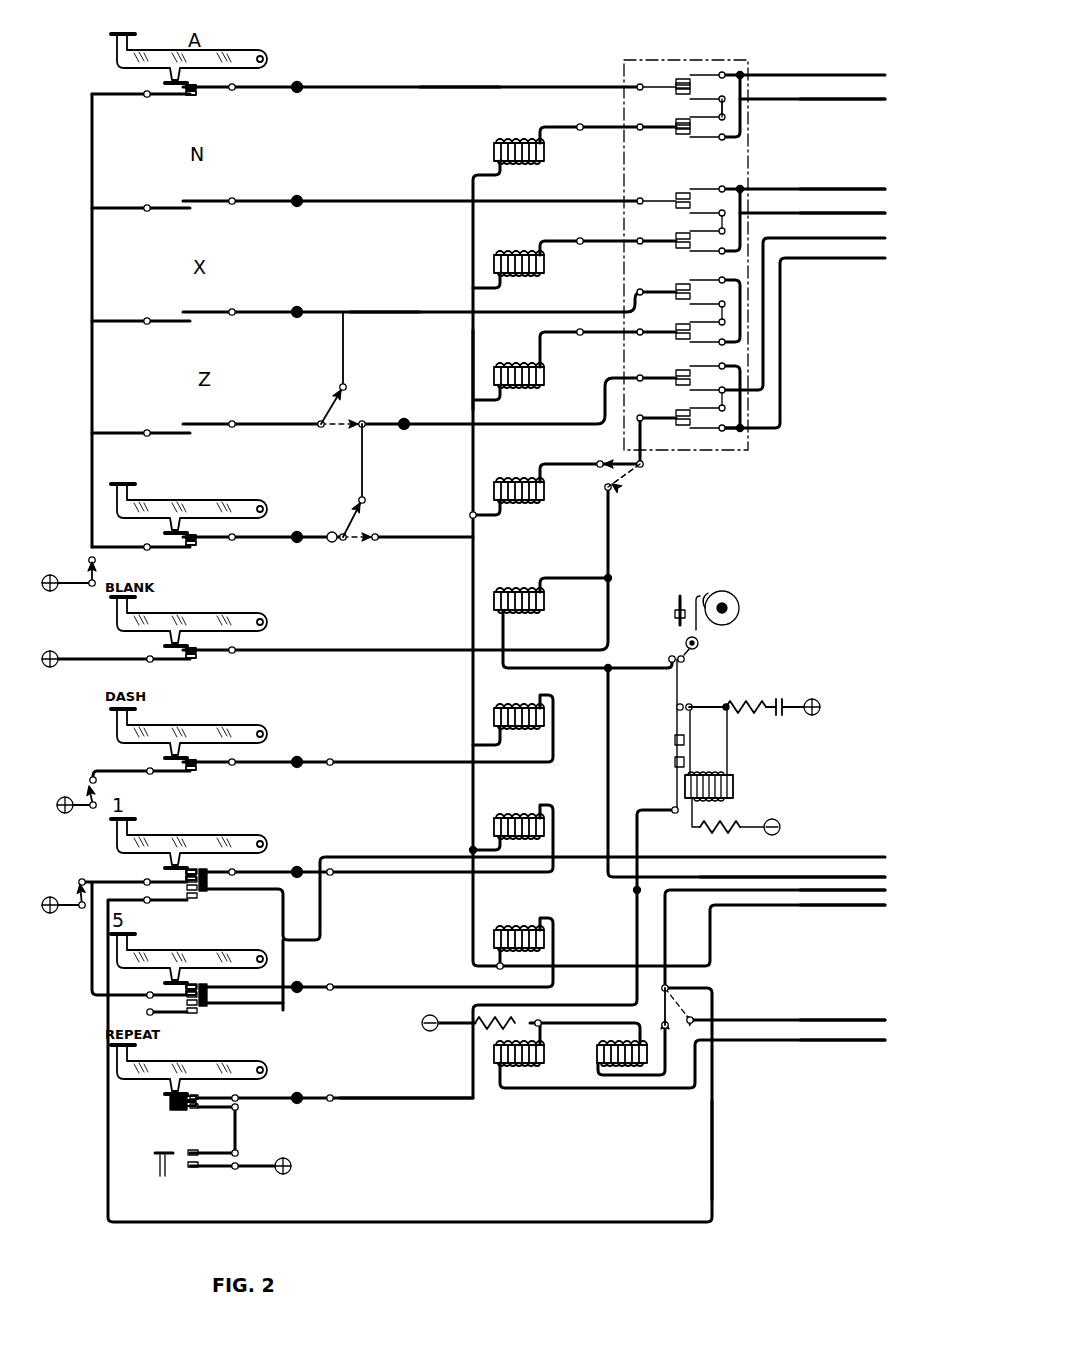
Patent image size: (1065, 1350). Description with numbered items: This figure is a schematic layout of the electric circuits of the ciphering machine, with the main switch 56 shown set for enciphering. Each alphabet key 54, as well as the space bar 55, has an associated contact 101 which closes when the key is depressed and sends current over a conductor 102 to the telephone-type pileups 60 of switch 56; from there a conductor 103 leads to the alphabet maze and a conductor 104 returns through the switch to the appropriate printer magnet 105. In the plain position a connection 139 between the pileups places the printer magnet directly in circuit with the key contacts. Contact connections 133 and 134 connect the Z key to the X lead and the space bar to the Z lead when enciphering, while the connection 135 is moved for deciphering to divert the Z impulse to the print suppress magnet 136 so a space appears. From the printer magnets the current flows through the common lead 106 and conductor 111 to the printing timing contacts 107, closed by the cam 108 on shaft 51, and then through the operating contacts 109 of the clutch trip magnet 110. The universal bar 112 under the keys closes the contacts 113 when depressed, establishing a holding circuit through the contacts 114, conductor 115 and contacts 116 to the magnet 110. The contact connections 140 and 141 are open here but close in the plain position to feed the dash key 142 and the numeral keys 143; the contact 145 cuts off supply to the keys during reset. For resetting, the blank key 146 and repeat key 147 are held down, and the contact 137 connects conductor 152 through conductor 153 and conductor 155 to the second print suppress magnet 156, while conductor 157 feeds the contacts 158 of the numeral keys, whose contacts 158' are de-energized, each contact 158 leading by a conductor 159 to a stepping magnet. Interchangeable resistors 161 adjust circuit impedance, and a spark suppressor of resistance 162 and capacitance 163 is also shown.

The alphabet key 54 is at (124, 32).
The key contact 101 is at (196, 93).
The conductor 102 is at (458, 86).
The conductor 103 is at (845, 102).
The conductor 104 is at (798, 189).
The pileup 60 is at (676, 128).
The connection 139 is at (724, 108).
The main switch 56 is at (697, 184).
The printer magnet 105 is at (548, 266).
The common lead 106 is at (470, 366).
The contact connection 133 is at (340, 404).
The contact connection 134 is at (352, 518).
The connection 135 is at (625, 462).
The space bar 55 is at (232, 505).
The contact 145 is at (96, 574).
The blank key 146 is at (214, 620).
The print suppress magnet 136 is at (545, 602).
The printing timing contacts 107 is at (680, 600).
The shaft 51 is at (735, 616).
The cam 108 is at (706, 640).
The resistance 162 is at (754, 700).
The capacitance 163 is at (780, 700).
The dash key 142 is at (200, 733).
The operating contacts 109 is at (673, 738).
The contacts 116 is at (673, 762).
The clutch trip magnet 110 is at (735, 785).
The contact connection 140 is at (96, 795).
The resistor 161 is at (722, 832).
The numeral key 143 is at (200, 845).
The conductor 159 is at (365, 857).
The contact 158' is at (250, 864).
The contact 158 is at (214, 941).
The contact connection 141 is at (72, 890).
The conductor 111 is at (788, 875).
The conductor 152 is at (832, 908).
The contact 137 is at (665, 990).
The conductor 153 is at (785, 1018).
The conductor 155 is at (785, 1042).
The repeat key 147 is at (200, 1070).
The second print suppress magnet 156 is at (518, 1065).
The conductor 157 is at (716, 1130).
The contacts 114 is at (185, 1110).
The contacts 113 is at (200, 1152).
The universal bar 112 is at (165, 1172).
The conductor 115 is at (355, 1100).